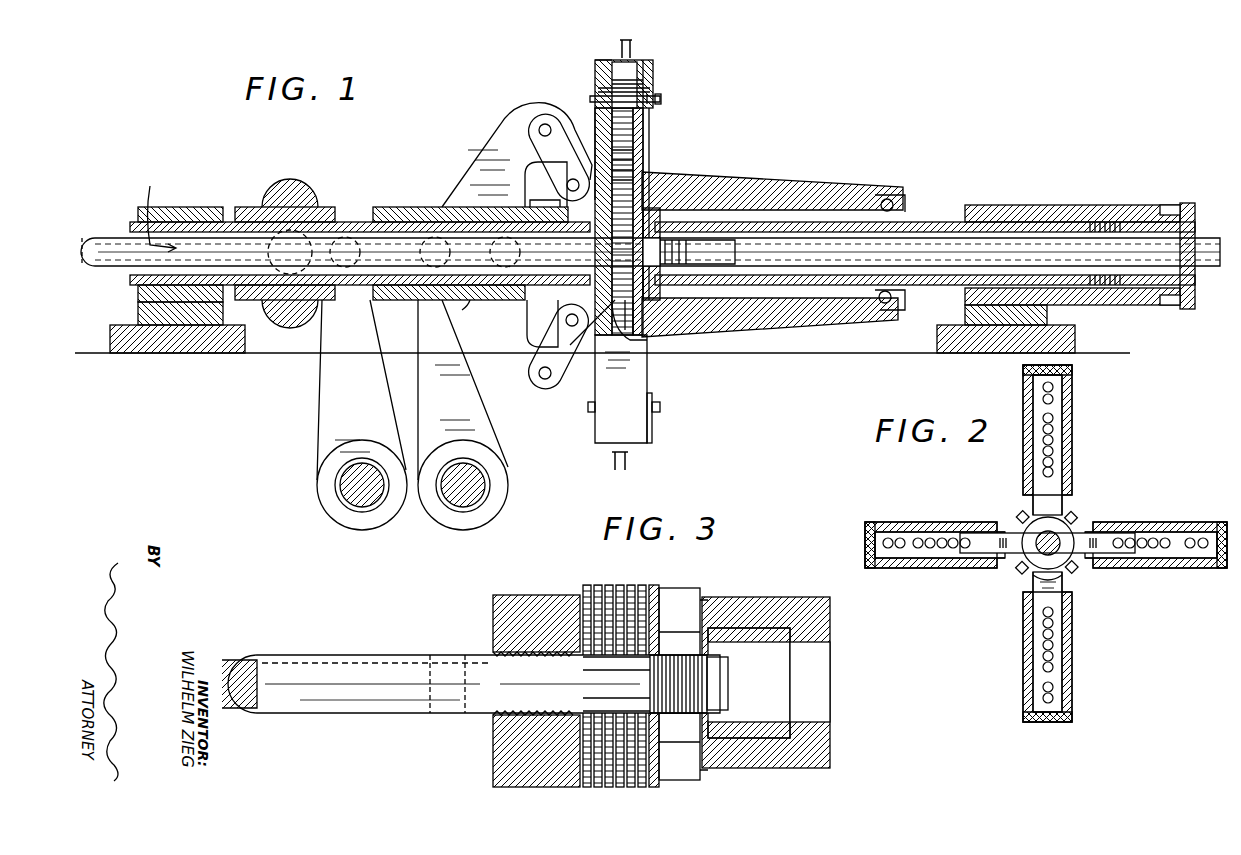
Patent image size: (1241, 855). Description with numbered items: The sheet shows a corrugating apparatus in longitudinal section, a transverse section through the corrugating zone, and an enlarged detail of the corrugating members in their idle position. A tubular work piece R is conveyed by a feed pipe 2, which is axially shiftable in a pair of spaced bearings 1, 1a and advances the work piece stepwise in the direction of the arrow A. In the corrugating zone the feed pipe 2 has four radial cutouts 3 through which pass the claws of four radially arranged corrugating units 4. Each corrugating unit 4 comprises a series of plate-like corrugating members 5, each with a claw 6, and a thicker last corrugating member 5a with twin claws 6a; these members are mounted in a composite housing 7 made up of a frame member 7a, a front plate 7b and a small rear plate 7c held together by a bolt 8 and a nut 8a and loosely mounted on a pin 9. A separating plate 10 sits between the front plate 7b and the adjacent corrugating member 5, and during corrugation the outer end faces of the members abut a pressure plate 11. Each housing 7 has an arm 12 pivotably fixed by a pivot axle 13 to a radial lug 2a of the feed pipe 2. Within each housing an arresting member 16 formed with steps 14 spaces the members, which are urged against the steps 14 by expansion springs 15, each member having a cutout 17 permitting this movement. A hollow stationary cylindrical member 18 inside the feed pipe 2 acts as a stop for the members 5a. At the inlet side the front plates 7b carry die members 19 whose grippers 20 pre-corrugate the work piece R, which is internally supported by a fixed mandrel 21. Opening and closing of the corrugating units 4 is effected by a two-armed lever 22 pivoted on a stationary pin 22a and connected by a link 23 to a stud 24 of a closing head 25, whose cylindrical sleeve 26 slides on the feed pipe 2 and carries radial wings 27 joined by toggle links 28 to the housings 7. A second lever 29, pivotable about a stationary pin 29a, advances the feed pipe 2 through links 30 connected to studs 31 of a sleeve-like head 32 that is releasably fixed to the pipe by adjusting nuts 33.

In FIG. 1, the tubular work piece R is at (96, 244).
In FIG. 3, the tubular work piece R is at (292, 714).
In FIG. 2, the tubular work piece R is at (1072, 535).
In FIG. 1, the arrow A is at (162, 207).
In FIG. 1, the bearing 1 is at (175, 210).
In FIG. 1, the bearing 1a is at (985, 207).
In FIG. 1, the feed pipe 2 is at (372, 222).
In FIG. 1, the radial lug 2a is at (905, 205).
In FIG. 1, the cutout 3 is at (655, 210).
In FIG. 3, the cutout 3 is at (690, 740).
In FIG. 2, the cutout 3 is at (1066, 522).
In FIG. 1, the corrugating unit 4 is at (638, 352).
In FIG. 2, the corrugating unit 4 is at (1088, 433).
In FIG. 1, the corrugating member 5 is at (633, 138).
In FIG. 3, the corrugating member 5 is at (640, 787).
In FIG. 2, the corrugating member 5 is at (1022, 565).
In FIG. 1, the last corrugating member 5a is at (643, 158).
In FIG. 3, the last corrugating member 5a is at (654, 787).
In FIG. 3, the claw 6 is at (590, 710).
In FIG. 2, the claw 6 is at (1055, 580).
In FIG. 3, the twin claws 6a is at (660, 640).
In FIG. 1, the housing 7 is at (653, 62).
In FIG. 2, the housing 7 is at (905, 522).
In FIG. 1, the frame member 7a is at (603, 60).
In FIG. 1, the front plate 7b is at (595, 108).
In FIG. 1, the rear plate 7c is at (653, 75).
In FIG. 1, the bolt 8 is at (663, 99).
In FIG. 1, the nut 8a is at (653, 88).
In FIG. 1, the pin 9 is at (612, 82).
In FIG. 1, the separating plate 10 is at (598, 90).
In FIG. 1, the pressure plate 11 is at (650, 70).
In FIG. 2, the pressure plate 11 is at (1072, 372).
In FIG. 1, the arm 12 is at (785, 185).
In FIG. 1, the pivot axle 13 is at (888, 200).
In FIG. 1, the step 14 is at (600, 330).
In FIG. 1, the expansion spring 15 is at (612, 125).
In FIG. 2, the expansion spring 15 is at (1052, 432).
In FIG. 1, the arresting member 16 is at (650, 328).
In FIG. 1, the cutout 17 is at (638, 335).
In FIG. 1, the cylindrical member 18 is at (722, 300).
In FIG. 3, the cylindrical member 18 is at (765, 640).
In FIG. 1, the die member 19 is at (546, 184).
In FIG. 3, the die member 19 is at (520, 600).
In FIG. 3, the gripper 20 is at (506, 652).
In FIG. 1, the mandrel 21 is at (712, 178).
In FIG. 3, the mandrel 21 is at (240, 660).
In FIG. 2, the mandrel 21 is at (1036, 555).
In FIG. 1, the two-armed lever 22 is at (490, 420).
In FIG. 1, the stationary pin 22a is at (458, 505).
In FIG. 1, the link 23 is at (529, 323).
In FIG. 1, the stud 24 is at (474, 315).
In FIG. 1, the closing head 25 is at (466, 143).
In FIG. 1, the cylindrical sleeve 26 is at (382, 207).
In FIG. 1, the radial wing 27 is at (460, 180).
In FIG. 1, the toggle link 28 is at (540, 132).
In FIG. 1, the advancing lever 29 is at (322, 403).
In FIG. 1, the stationary pin 29a is at (358, 505).
In FIG. 1, the link 30 is at (345, 237).
In FIG. 1, the stud 31 is at (278, 232).
In FIG. 1, the sleeve-like head 32 is at (290, 203).
In FIG. 1, the adjusting nut 33 is at (300, 305).